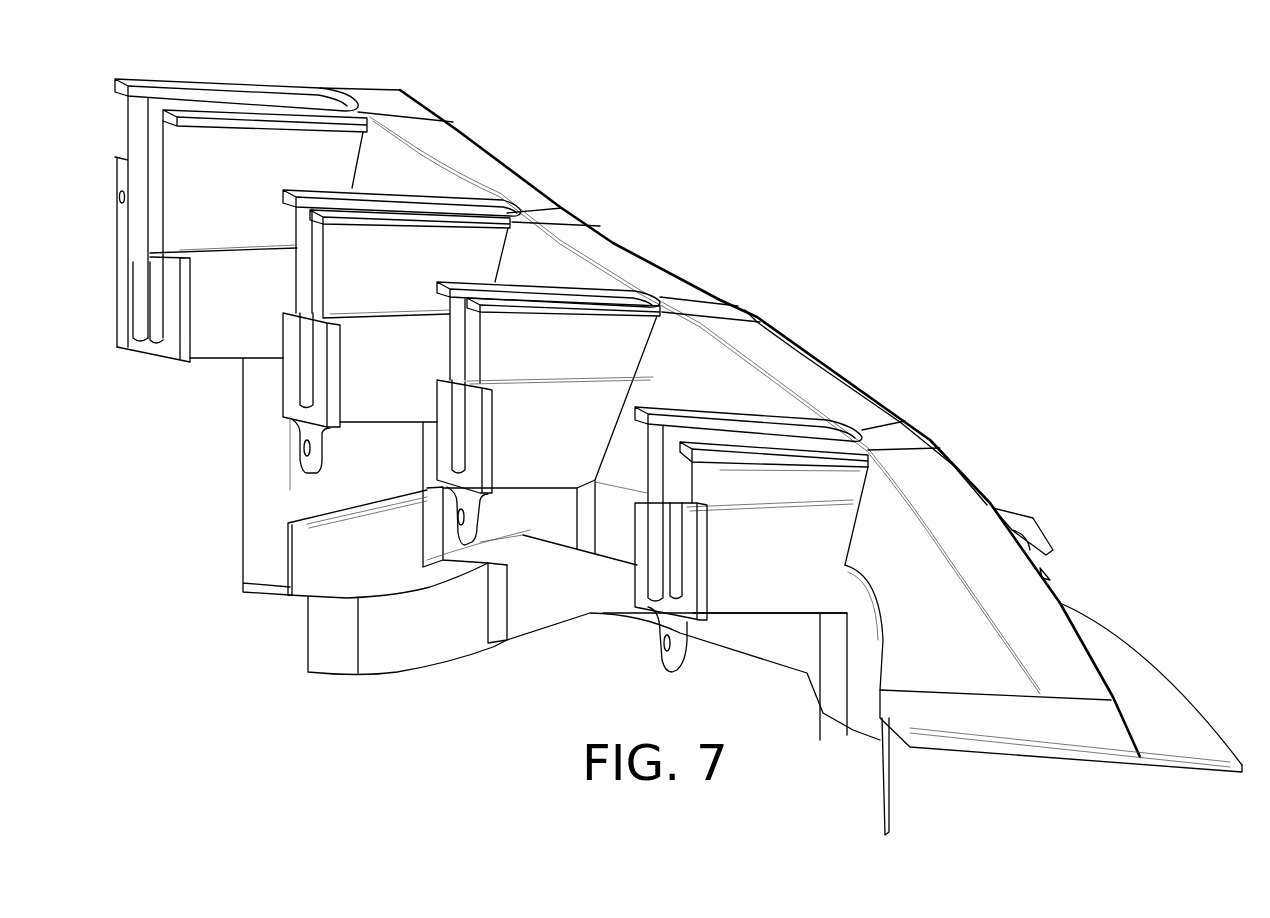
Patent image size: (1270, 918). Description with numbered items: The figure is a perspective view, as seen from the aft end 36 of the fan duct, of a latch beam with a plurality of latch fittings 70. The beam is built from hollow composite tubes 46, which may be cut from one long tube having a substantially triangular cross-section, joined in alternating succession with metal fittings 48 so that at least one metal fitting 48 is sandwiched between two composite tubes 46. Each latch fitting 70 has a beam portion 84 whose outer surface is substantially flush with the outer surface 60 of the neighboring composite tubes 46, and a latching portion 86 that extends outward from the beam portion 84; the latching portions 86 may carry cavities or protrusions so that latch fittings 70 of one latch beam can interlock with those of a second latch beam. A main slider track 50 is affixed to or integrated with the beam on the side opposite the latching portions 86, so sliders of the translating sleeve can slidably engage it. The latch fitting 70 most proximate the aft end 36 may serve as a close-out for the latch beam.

The aft end 36 is at (957, 750).
The hollow composite tubes 46 is at (457, 150).
The metal fittings 48 is at (380, 93).
The main slider track 50 is at (1040, 527).
The outer surface 60 is at (733, 385).
The latch fittings 70 is at (290, 375).
The beam portion 84 is at (358, 95).
The latching portion 86 is at (323, 162).